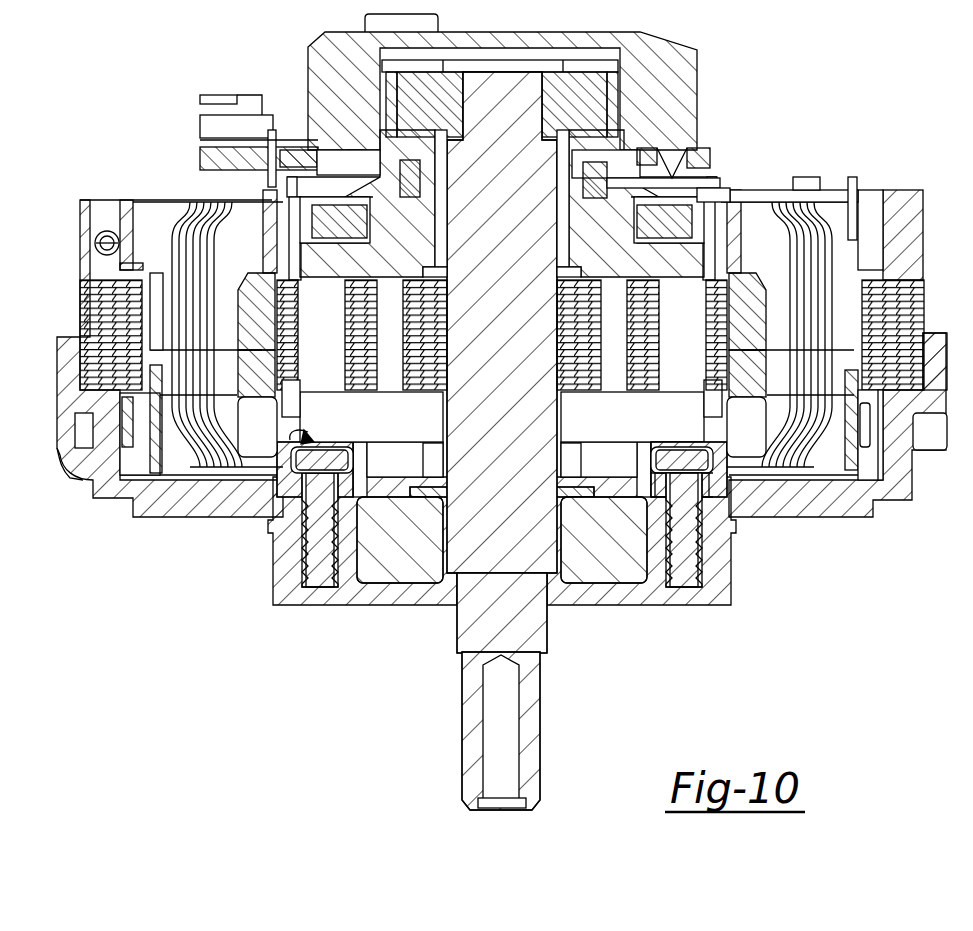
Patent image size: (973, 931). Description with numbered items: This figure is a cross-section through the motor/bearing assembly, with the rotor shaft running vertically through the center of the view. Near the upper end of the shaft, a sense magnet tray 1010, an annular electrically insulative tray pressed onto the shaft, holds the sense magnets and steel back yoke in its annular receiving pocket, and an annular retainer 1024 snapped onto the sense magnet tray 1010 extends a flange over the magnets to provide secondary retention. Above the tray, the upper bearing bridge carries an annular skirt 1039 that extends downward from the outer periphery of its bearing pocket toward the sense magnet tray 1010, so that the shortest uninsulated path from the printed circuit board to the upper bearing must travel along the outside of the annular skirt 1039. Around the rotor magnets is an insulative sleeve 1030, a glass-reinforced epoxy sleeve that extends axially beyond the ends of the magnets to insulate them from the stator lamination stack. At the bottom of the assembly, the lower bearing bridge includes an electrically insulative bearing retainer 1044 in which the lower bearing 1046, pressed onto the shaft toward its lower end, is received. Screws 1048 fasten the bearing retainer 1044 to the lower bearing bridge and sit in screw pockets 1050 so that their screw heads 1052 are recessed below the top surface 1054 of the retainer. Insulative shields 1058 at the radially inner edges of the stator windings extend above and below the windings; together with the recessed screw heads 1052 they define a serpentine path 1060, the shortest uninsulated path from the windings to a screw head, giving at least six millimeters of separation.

The sense magnet tray 1010 is at (605, 230).
The annular retainer 1024 is at (598, 165).
The annular skirt 1039 is at (385, 175).
The insulative sleeve 1030 is at (305, 410).
The bearing retainer 1044 is at (662, 473).
The lower bearing 1046 is at (410, 553).
The screws 1048 is at (703, 540).
The screw pockets 1050 is at (650, 463).
The screw heads 1052 is at (723, 470).
The top surface 1054 is at (640, 458).
The insulative shields 1058 is at (277, 423).
The serpentine path 1060 is at (292, 475).